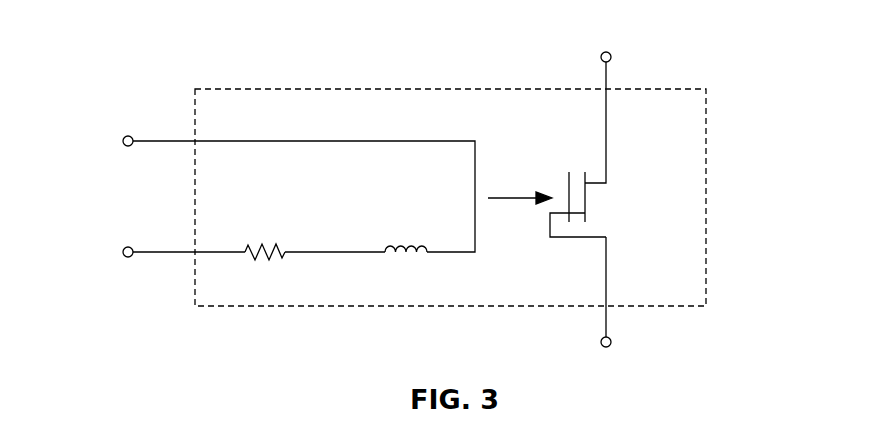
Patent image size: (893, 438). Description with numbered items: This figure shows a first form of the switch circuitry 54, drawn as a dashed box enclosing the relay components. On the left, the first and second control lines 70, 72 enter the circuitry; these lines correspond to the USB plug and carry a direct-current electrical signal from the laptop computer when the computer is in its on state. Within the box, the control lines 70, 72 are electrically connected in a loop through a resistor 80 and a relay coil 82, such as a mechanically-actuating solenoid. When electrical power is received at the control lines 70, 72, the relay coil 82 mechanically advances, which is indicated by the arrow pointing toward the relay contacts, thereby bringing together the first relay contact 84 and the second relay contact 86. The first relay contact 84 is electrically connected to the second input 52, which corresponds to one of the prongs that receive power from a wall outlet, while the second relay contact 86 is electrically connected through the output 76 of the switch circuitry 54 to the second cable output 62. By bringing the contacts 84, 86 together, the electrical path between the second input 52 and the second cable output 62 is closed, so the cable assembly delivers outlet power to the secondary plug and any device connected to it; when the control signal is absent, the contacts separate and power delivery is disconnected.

The second input 52 is at (611, 350).
The switch circuitry 54 is at (718, 202).
The second cable output 62 is at (600, 50).
The first control line 70 is at (126, 264).
The second control line 72 is at (125, 131).
The output 76 is at (608, 78).
The resistor 80 is at (265, 268).
The relay coil 82 is at (405, 263).
The first relay contact 84 is at (560, 182).
The second relay contact 86 is at (600, 210).